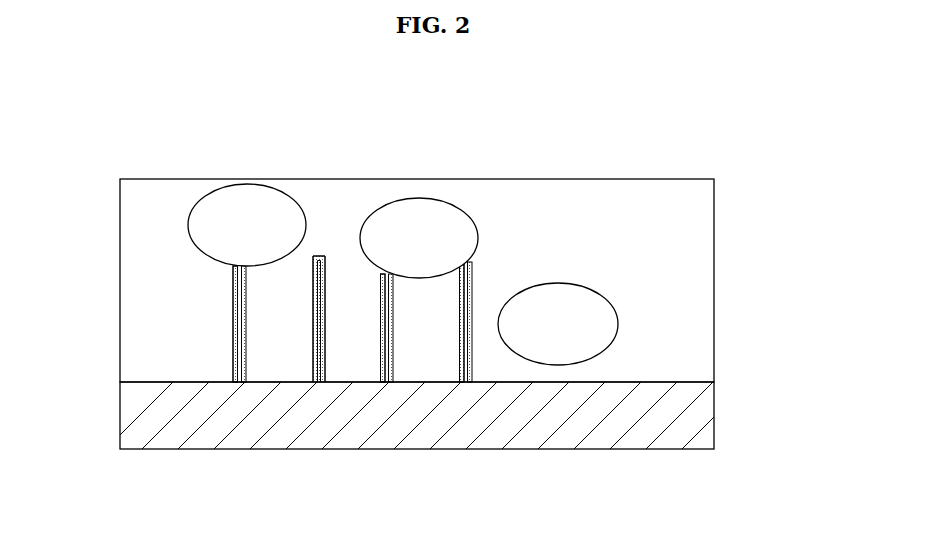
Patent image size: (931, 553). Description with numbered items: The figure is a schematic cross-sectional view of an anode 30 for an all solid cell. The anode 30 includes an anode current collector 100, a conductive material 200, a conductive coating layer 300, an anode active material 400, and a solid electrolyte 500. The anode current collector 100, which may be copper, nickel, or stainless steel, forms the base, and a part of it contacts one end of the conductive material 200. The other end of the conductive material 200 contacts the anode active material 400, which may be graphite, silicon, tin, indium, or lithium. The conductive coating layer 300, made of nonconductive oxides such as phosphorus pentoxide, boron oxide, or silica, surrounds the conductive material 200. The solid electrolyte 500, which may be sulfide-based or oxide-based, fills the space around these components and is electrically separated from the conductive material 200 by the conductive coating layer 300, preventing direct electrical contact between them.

The anode 30 is at (650, 158).
The anode current collector 100 is at (302, 421).
The conductive material 200 is at (467, 363).
The conductive coating layer 300 is at (462, 350).
The anode active material 400 is at (205, 225).
The solid electrolyte 500 is at (690, 208).